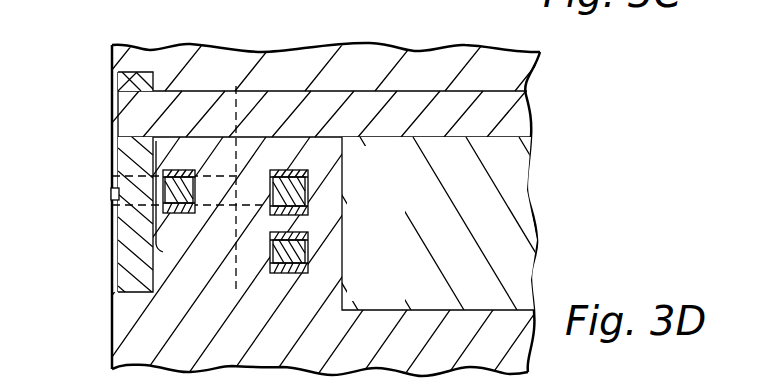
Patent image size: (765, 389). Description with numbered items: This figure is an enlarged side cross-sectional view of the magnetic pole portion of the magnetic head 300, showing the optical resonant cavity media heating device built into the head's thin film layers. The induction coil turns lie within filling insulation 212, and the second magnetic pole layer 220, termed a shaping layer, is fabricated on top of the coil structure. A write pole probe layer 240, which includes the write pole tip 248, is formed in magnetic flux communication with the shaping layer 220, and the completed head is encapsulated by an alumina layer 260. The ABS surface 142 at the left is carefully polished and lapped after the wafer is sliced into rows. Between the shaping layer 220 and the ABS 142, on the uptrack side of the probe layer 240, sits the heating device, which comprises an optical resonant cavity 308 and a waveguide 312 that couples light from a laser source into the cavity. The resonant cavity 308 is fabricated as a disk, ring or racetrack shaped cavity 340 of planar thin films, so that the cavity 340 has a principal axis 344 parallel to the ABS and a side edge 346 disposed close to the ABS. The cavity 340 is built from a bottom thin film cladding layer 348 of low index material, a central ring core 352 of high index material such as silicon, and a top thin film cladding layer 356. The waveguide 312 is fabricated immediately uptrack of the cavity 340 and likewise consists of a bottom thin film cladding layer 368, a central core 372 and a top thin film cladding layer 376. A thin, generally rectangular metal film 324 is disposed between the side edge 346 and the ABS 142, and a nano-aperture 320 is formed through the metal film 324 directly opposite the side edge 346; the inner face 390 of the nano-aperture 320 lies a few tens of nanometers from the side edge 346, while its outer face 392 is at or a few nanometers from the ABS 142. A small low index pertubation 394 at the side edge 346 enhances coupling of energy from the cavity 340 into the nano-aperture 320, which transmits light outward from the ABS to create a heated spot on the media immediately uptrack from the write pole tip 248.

The magnetic head 300 is at (157, 40).
The principal axis 344 is at (233, 72).
The disk, ring or racetrack shaped cavity 340 is at (285, 170).
The optical resonant cavity 308 is at (285, 170).
The ABS surface 142 is at (113, 64).
The write pole tip 248 is at (133, 101).
The alumina layer 260 is at (458, 84).
The write pole probe layer 240 is at (531, 110).
The second magnetic pole layer 220 is at (529, 190).
The filling insulation 212 is at (530, 350).
The nano-aperture 320 is at (108, 187).
The outer face 392 is at (110, 197).
The metal film 324 is at (128, 254).
The pertubation 394 is at (163, 193).
The side edge 346 is at (163, 207).
The inner face 390 is at (183, 207).
The top thin film cladding layer 356 is at (308, 174).
The central ring core 352 is at (305, 191).
The bottom thin film cladding layer 348 is at (308, 211).
The top thin film cladding layer 376 is at (308, 237).
The central core 372 is at (306, 252).
The bottom thin film cladding layer 368 is at (308, 270).
The waveguide 312 is at (291, 273).